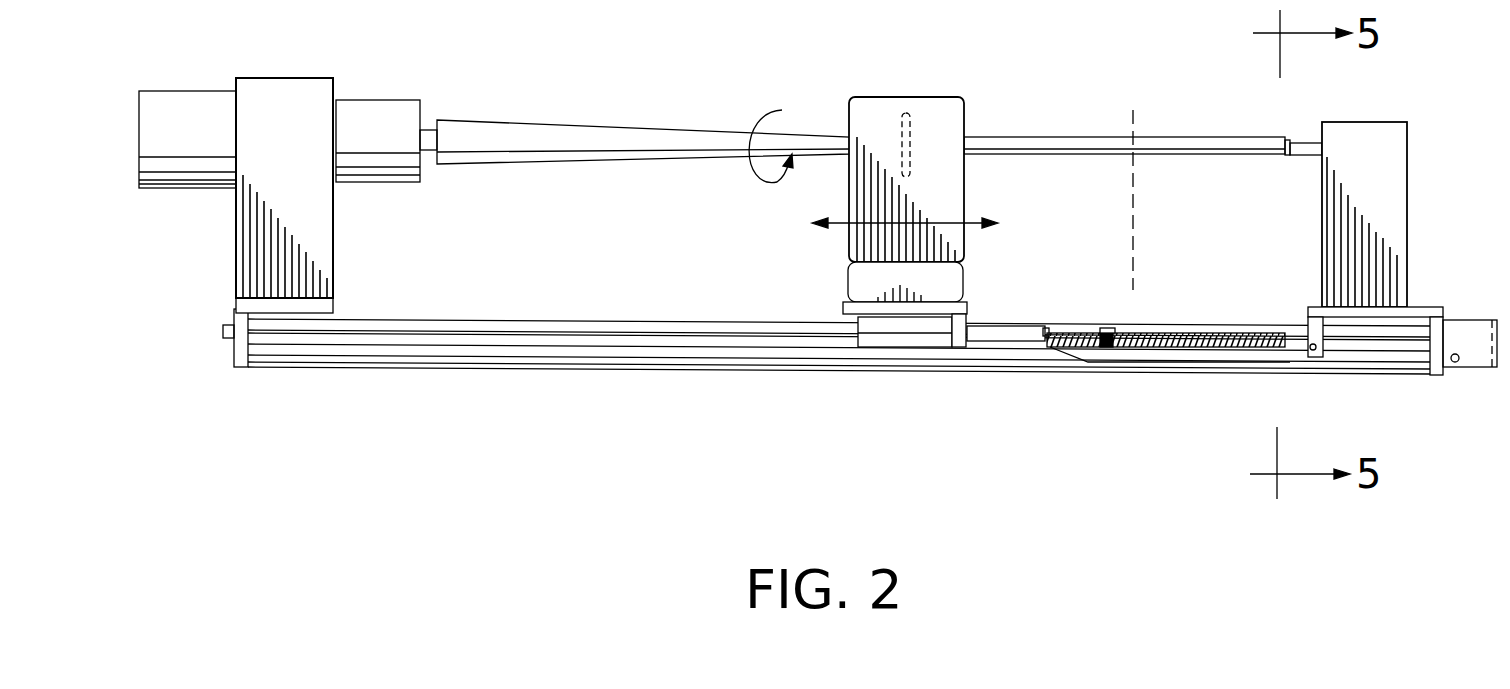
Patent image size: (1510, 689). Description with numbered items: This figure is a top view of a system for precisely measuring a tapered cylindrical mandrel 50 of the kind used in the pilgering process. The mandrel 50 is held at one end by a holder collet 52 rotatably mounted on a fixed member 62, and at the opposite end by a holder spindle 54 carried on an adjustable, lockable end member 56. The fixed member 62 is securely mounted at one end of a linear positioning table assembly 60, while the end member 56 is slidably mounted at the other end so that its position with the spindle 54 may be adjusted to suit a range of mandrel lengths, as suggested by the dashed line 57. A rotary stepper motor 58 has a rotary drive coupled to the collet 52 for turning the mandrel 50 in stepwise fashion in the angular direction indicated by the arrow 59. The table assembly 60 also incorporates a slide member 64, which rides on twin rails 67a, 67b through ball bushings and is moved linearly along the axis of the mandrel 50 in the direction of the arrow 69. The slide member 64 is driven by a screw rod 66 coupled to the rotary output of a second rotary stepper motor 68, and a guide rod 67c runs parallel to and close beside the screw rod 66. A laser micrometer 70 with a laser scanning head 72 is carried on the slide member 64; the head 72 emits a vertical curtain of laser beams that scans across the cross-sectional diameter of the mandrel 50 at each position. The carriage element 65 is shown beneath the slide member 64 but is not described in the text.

The mandrel 50 is at (609, 111).
The holder collet 52 is at (380, 108).
The holder spindle 54 is at (1304, 145).
The end member 56 is at (1412, 312).
The dashed line 57 is at (1135, 240).
The rotary stepper motor 58 is at (213, 108).
The arrow 59 is at (755, 178).
The linear positioning table assembly 60 is at (518, 416).
The fixed member 62 is at (310, 224).
The slide member 64 is at (940, 307).
The slide carriage 65 is at (895, 333).
The screw rod 66 is at (647, 332).
The rail 67a is at (1010, 333).
The rail 67b is at (1267, 330).
The guide rod 67c is at (1110, 347).
The rotary stepper motor 68 is at (1483, 353).
The arrow 69 is at (932, 222).
The laser micrometer 70 is at (988, 132).
The laser scanning head 72 is at (910, 120).